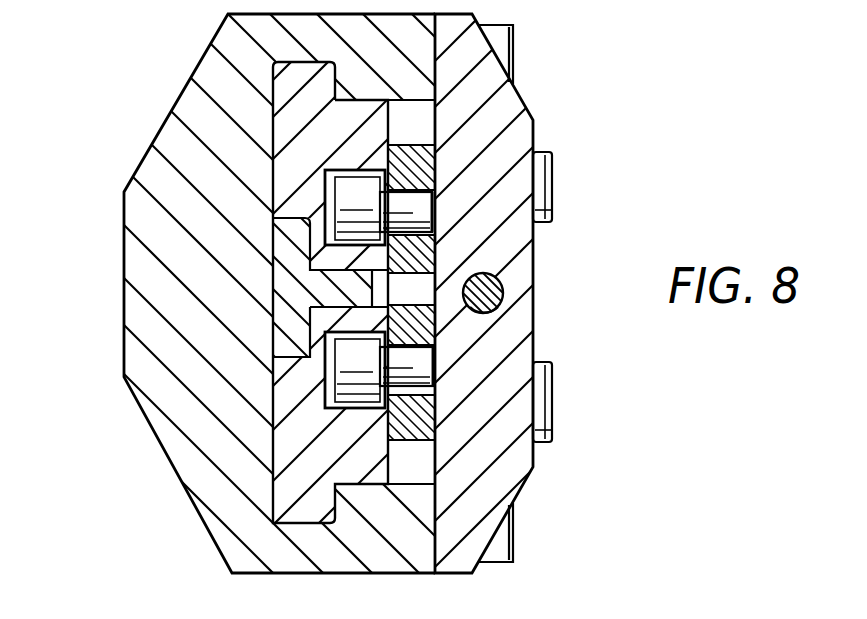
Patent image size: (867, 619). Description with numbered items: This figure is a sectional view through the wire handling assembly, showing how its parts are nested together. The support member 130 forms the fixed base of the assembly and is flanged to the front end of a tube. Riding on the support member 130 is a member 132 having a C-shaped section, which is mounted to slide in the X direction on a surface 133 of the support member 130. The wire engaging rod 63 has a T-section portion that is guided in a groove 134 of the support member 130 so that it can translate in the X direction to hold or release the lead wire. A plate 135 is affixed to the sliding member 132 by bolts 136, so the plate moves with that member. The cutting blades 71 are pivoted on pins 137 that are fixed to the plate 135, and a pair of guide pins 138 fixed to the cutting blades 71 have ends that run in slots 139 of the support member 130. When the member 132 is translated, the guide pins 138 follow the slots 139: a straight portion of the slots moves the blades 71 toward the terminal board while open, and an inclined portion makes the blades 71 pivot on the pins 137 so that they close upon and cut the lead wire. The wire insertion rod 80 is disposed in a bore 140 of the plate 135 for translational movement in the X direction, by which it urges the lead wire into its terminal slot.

The member 132 is at (157, 165).
The support member 130 is at (297, 125).
The surface 133 is at (303, 62).
The wire engaging rod 63 is at (290, 317).
The groove 134 is at (276, 364).
The slots 139 is at (323, 394).
The guide pins 138 is at (432, 213).
The cutting blades 71 is at (419, 131).
The plate 135 is at (533, 125).
The bolts 136 is at (517, 32).
The pins 137 is at (552, 160).
The wire insertion rod 80 is at (497, 293).
The bore 140 is at (500, 312).